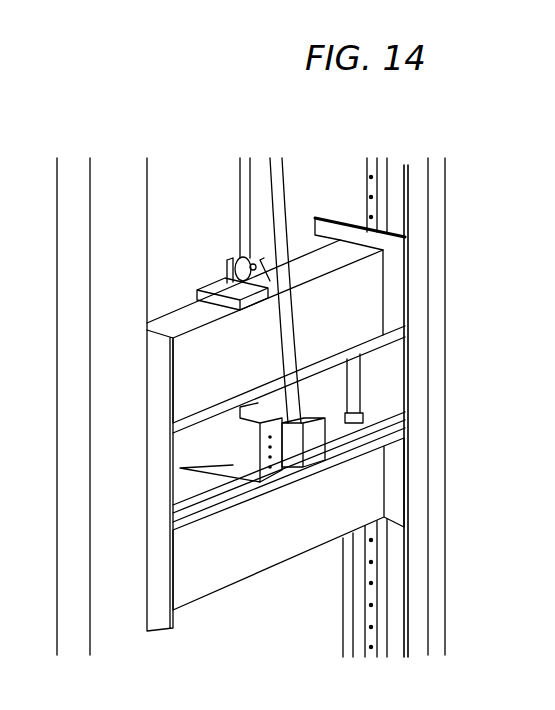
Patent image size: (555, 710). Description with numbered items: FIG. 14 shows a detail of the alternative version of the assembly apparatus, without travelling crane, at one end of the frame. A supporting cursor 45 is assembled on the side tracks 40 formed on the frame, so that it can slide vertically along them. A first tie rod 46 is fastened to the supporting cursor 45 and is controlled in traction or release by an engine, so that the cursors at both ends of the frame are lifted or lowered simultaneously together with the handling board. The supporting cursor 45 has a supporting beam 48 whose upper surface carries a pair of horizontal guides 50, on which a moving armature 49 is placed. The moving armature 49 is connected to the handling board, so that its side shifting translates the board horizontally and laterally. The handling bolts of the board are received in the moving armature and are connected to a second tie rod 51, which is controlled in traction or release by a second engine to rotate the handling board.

The side track 40 is at (370, 638).
The supporting cursor 45 is at (160, 462).
The first tie rod 46 is at (238, 201).
The supporting beam 48 is at (225, 568).
The moving armature 49 is at (233, 465).
The horizontal guides 50 is at (220, 488).
The second tie rod 51 is at (298, 317).